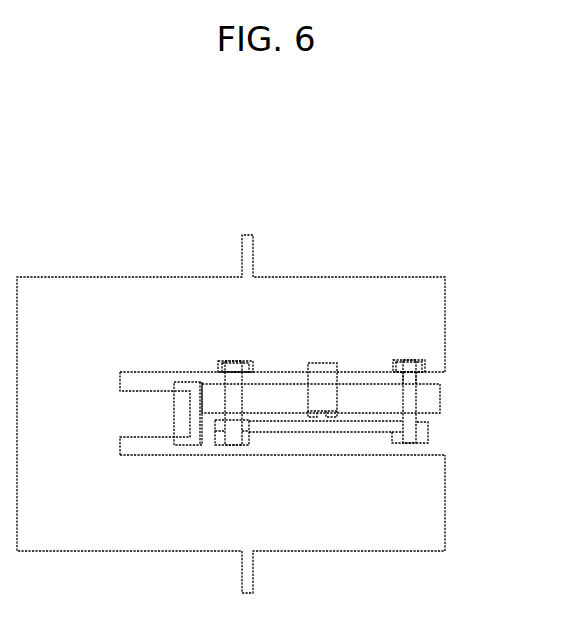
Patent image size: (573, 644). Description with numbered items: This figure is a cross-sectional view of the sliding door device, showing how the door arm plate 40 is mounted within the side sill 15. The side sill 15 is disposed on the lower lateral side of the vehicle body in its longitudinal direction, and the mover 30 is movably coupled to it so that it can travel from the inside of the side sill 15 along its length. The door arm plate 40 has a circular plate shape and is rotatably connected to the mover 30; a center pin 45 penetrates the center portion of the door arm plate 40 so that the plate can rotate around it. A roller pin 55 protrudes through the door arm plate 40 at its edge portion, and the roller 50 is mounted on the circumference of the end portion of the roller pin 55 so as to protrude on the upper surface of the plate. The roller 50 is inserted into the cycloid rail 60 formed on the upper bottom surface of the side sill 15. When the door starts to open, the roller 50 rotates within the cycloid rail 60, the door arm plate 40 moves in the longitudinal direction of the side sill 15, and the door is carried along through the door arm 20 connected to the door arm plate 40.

The side sill 15 is at (298, 293).
The door arm 20 is at (423, 425).
The mover 30 is at (189, 445).
The door arm plate 40 is at (433, 403).
The center pin 45 is at (322, 363).
The roller 50 is at (418, 362).
The roller pin 55 is at (410, 380).
The cycloid rail 60 is at (403, 360).